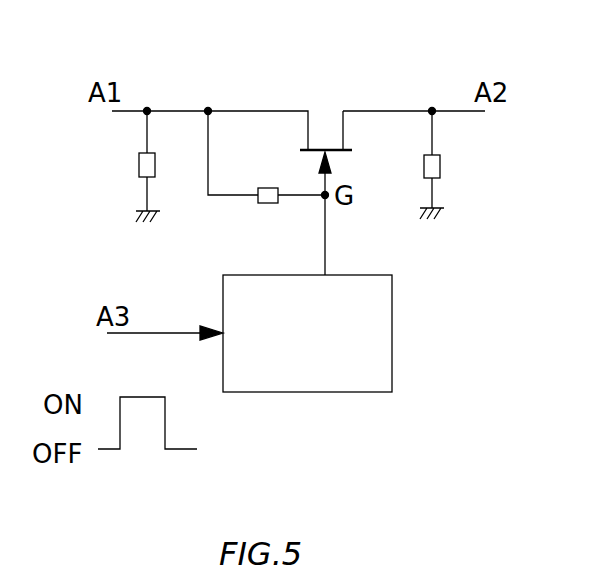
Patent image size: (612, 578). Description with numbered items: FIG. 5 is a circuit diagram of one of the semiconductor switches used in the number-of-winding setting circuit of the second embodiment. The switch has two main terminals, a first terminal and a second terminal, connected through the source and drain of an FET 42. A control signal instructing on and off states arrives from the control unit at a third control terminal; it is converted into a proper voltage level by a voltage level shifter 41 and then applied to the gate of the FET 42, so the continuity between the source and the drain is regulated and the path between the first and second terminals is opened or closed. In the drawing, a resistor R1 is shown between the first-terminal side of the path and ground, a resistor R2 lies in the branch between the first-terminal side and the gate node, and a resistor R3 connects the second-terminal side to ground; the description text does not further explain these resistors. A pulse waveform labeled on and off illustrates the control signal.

The voltage level shifter 41 is at (392, 328).
The FET 42 is at (328, 106).
The resistor R1 is at (166, 166).
The resistor R2 is at (266, 175).
The resistor R3 is at (453, 165).